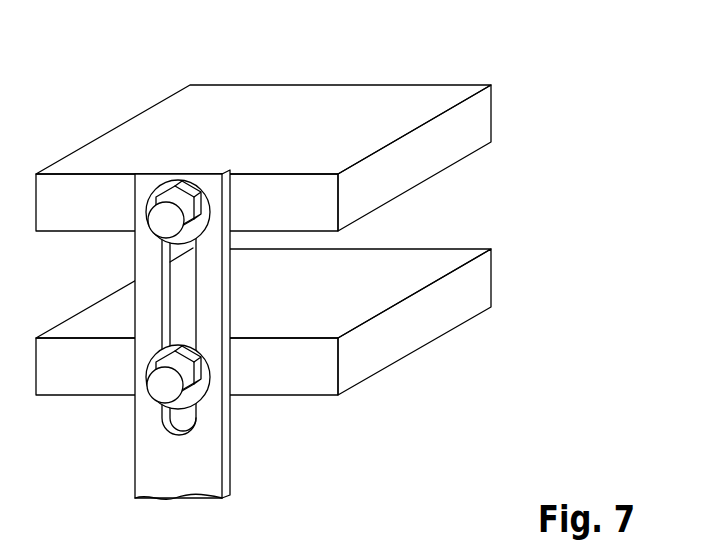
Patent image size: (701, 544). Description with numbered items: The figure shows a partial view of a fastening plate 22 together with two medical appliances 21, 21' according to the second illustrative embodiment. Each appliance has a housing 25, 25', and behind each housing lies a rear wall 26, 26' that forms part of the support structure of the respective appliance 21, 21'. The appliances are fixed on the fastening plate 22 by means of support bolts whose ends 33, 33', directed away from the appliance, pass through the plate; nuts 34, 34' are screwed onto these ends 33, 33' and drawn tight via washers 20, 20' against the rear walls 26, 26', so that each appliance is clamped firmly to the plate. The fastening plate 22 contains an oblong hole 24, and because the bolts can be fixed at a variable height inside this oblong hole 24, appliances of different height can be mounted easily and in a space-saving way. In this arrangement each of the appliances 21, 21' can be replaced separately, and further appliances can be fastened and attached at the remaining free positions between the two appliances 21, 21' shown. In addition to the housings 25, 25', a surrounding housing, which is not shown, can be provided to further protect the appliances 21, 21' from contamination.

The washer 20 is at (123, 157).
The washer 20' is at (129, 370).
The medical appliance 21 is at (332, 123).
The medical appliance 21' is at (336, 287).
The fastening plate 22 is at (251, 492).
The oblong hole 24 is at (182, 415).
The housing 25 is at (314, 94).
The housing 25' is at (316, 259).
The rear wall 26 is at (254, 202).
The rear wall 26' is at (258, 366).
The end of support bolt 33 is at (108, 169).
The end of support bolt 33' is at (118, 428).
The nut 34 is at (138, 150).
The nut 34' is at (130, 400).